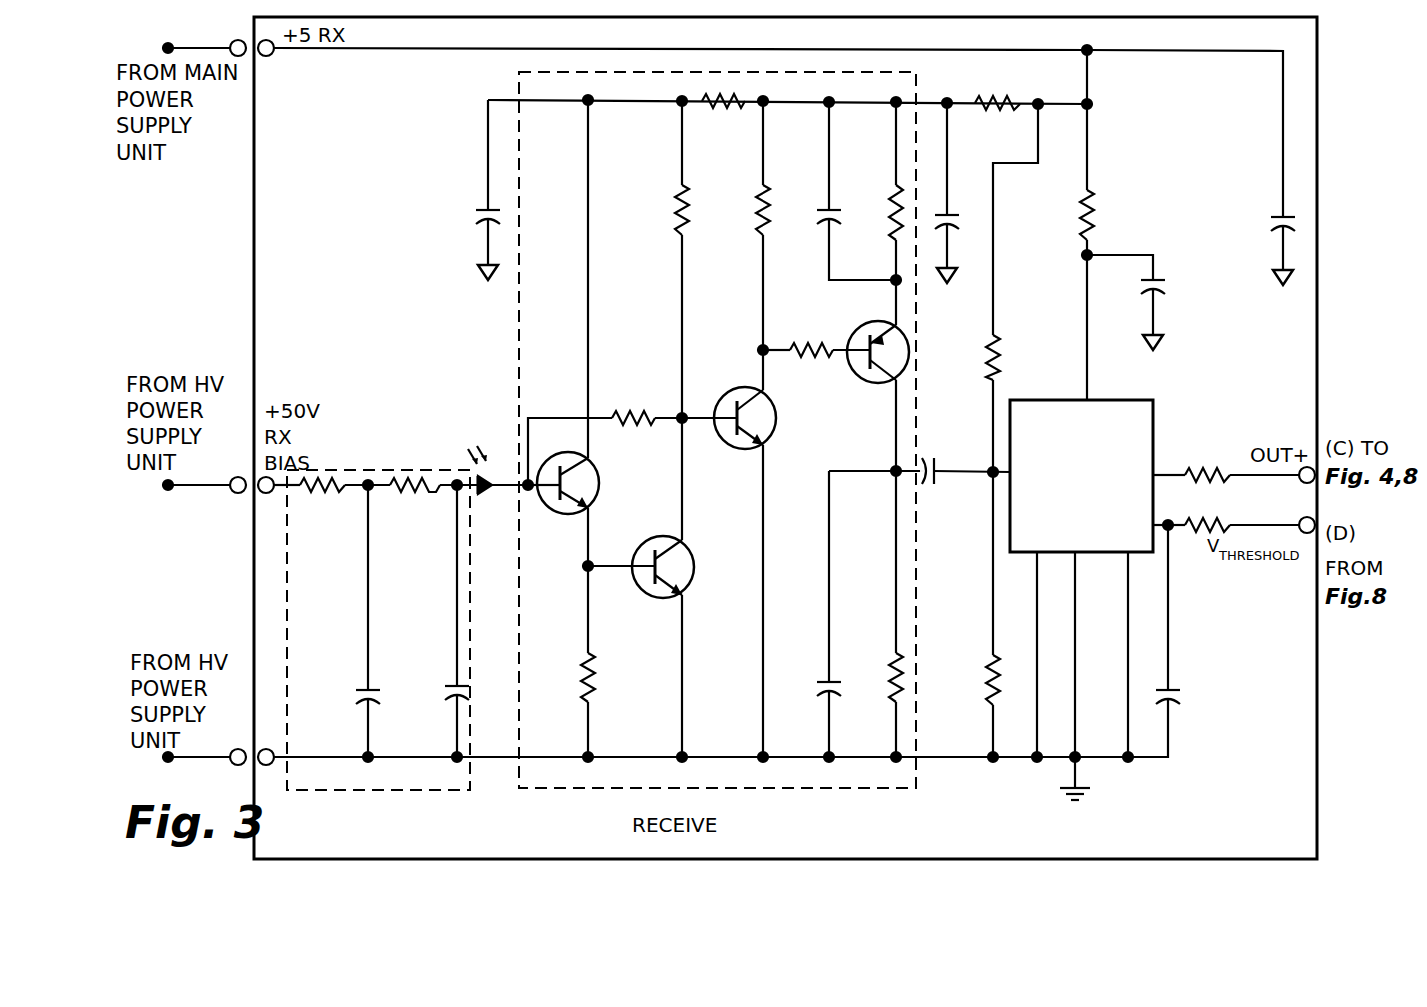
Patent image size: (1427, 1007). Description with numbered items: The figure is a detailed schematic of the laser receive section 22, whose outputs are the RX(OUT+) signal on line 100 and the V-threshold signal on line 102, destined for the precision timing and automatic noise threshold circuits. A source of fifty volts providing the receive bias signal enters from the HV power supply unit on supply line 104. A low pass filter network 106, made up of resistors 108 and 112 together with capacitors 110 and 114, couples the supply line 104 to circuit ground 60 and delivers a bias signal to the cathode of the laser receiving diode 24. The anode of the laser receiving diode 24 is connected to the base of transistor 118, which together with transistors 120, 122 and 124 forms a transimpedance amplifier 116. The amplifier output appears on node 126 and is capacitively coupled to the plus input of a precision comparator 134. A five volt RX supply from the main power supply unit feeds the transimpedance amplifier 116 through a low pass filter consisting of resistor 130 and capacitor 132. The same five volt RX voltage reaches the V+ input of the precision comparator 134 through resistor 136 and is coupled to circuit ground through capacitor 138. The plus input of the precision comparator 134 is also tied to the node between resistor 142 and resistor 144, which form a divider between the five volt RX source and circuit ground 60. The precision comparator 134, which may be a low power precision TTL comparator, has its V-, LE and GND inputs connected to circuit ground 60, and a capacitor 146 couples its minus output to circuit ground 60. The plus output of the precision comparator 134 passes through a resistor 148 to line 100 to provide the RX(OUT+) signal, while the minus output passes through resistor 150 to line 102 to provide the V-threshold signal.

The laser receive section 22 is at (1343, 668).
The laser receiving diode 24 is at (490, 495).
The circuit ground 60 is at (378, 731).
The line 100 is at (1240, 478).
The line 102 is at (1245, 524).
The supply line 104 is at (297, 490).
The low pass filter network 106 is at (375, 470).
The resistor 108 is at (322, 480).
The capacitor 110 is at (356, 690).
The resistor 112 is at (395, 490).
The capacitor 114 is at (445, 687).
The transimpedance amplifier 116 is at (542, 72).
The transistor 118 is at (599, 462).
The transistor 120 is at (681, 550).
The transistor 122 is at (722, 443).
The transistor 124 is at (852, 372).
The node 126 is at (893, 468).
The resistor 130 is at (996, 102).
The capacitor 132 is at (952, 214).
The precision comparator 134 is at (1148, 400).
The resistor 136 is at (1098, 215).
The capacitor 138 is at (1270, 222).
The resistor 142 is at (1002, 358).
The resistor 144 is at (985, 680).
The capacitor 146 is at (1180, 692).
The resistor 148 is at (1180, 472).
The resistor 150 is at (1196, 532).